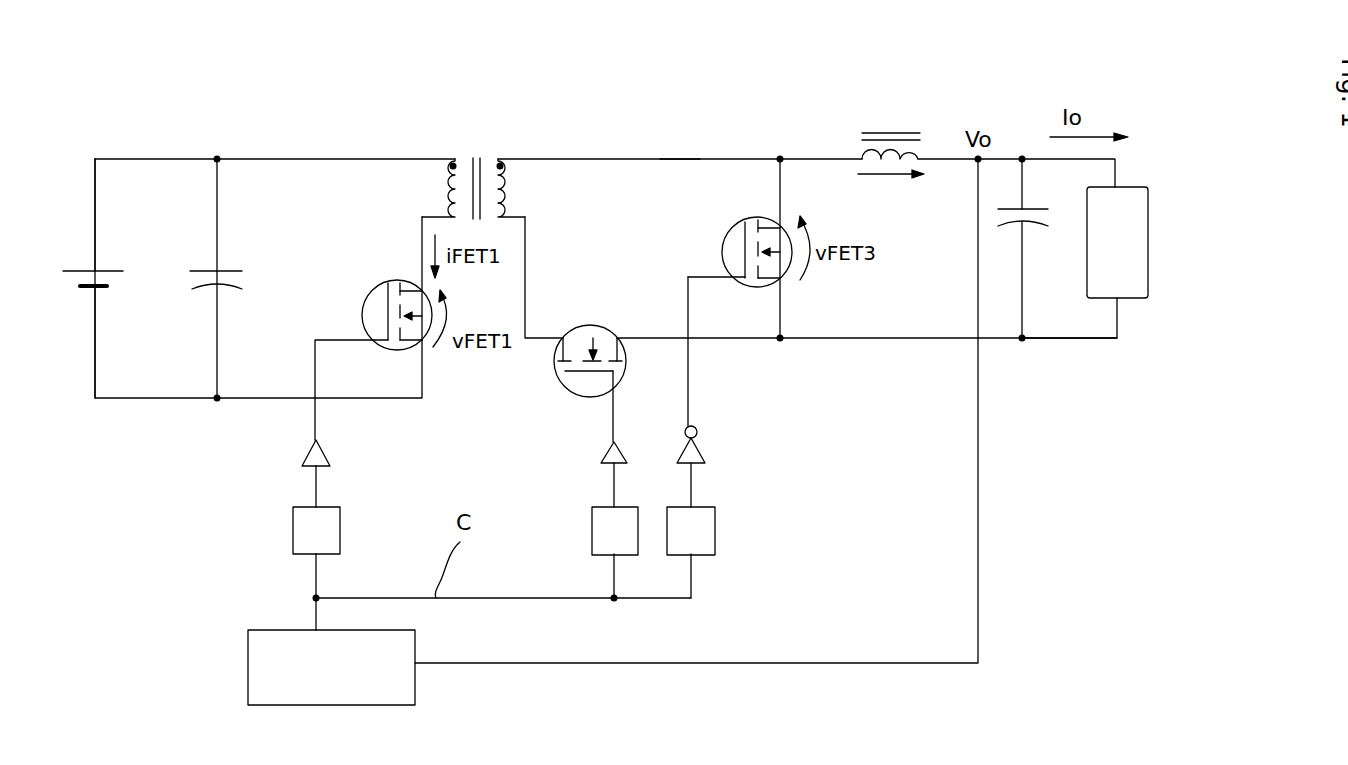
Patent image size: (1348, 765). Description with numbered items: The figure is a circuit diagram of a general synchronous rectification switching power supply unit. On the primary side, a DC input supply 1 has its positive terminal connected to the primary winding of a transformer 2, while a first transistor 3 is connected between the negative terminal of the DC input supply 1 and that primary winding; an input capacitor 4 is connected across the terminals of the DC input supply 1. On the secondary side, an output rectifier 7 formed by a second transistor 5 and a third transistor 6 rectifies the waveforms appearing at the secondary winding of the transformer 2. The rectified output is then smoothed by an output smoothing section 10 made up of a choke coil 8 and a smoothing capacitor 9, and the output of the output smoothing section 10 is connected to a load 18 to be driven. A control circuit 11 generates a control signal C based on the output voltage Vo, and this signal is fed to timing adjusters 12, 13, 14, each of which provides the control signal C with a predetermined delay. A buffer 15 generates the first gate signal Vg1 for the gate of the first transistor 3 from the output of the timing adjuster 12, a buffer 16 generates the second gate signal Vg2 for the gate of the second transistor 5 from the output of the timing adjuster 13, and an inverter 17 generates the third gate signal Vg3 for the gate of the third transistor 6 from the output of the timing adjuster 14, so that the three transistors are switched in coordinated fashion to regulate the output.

The DC input supply 1 is at (82, 272).
The transformer 2 is at (474, 158).
The first transistor 3 is at (386, 288).
The input capacitor 4 is at (236, 274).
The second transistor 5 is at (600, 334).
The third transistor 6 is at (726, 242).
The output rectifier 7 is at (675, 140).
The choke coil 8 is at (862, 136).
The smoothing capacitor 9 is at (1036, 224).
The output smoothing section 10 is at (893, 126).
The control circuit 11 is at (248, 662).
The timing adjuster 12 is at (340, 528).
The timing adjuster 13 is at (592, 530).
The timing adjuster 14 is at (715, 526).
The buffer 15 is at (330, 454).
The buffer 16 is at (602, 450).
The inverter 17 is at (698, 432).
The load 18 is at (1152, 236).